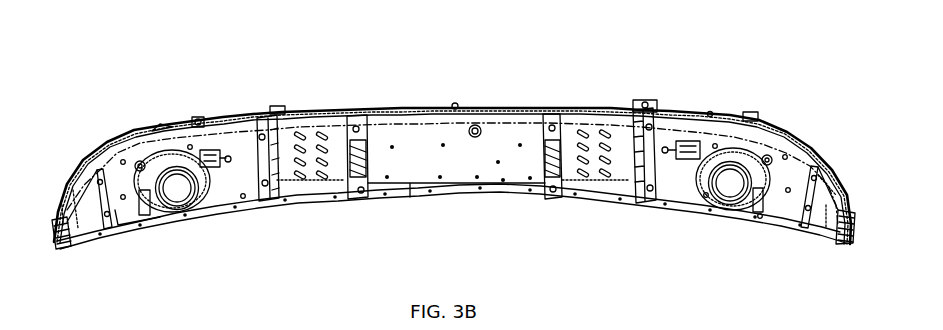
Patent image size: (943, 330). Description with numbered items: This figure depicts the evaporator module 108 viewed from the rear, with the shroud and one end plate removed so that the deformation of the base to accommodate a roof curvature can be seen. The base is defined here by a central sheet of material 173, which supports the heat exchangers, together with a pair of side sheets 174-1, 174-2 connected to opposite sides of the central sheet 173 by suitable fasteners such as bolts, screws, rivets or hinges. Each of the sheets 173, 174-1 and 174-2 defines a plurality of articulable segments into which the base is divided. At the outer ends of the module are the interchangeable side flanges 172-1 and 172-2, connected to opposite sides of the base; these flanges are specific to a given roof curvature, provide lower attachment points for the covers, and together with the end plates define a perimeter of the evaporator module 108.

The evaporator module 108 is at (175, 78).
The interchangeable side flange 172-1 is at (816, 232).
The interchangeable side flange 172-2 is at (78, 246).
The central sheet of material 173 is at (630, 213).
The side sheet 174-1 is at (787, 236).
The side sheet 174-2 is at (262, 212).